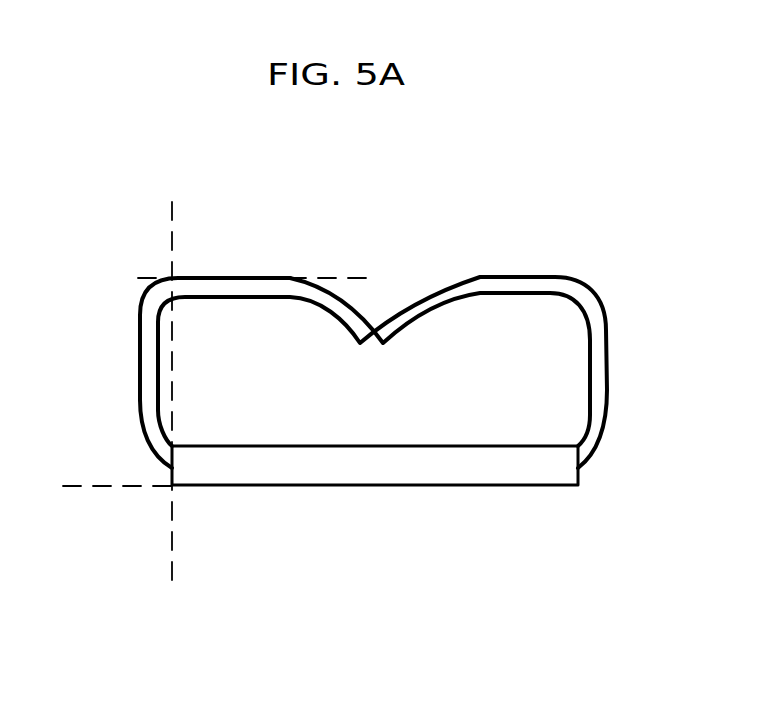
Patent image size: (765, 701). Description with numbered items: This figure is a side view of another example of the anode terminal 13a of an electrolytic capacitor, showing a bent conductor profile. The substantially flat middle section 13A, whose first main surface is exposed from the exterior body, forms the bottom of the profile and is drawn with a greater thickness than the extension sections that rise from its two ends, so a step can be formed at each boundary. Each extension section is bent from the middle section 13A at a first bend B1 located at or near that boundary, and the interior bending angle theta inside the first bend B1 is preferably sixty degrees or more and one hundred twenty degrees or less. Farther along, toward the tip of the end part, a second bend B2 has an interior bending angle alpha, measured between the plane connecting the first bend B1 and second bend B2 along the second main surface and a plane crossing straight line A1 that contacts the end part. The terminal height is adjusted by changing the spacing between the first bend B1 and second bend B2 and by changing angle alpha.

The anode terminal 13a is at (447, 268).
The middle section 13A is at (573, 497).
The straight line A1 is at (262, 279).
The second bend B2 is at (176, 300).
The first bend B1 is at (175, 458).